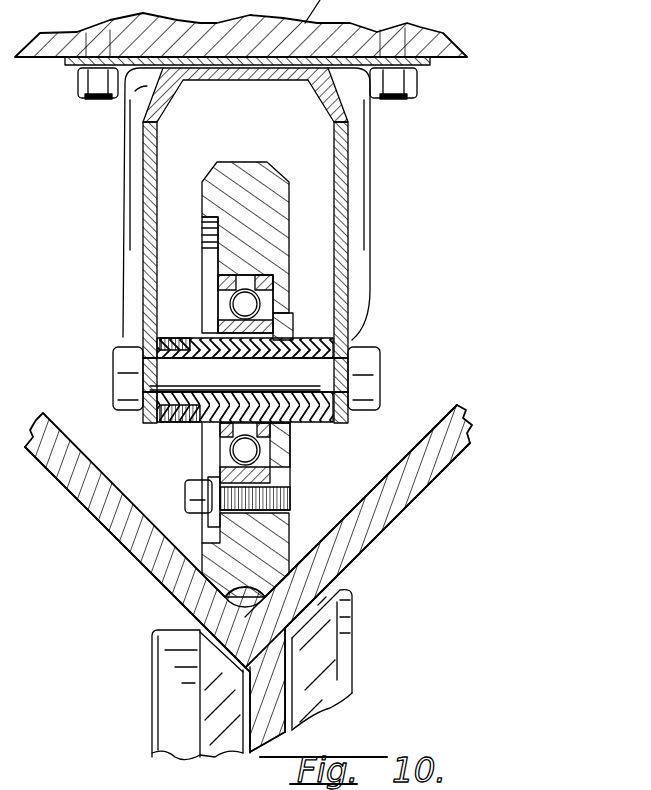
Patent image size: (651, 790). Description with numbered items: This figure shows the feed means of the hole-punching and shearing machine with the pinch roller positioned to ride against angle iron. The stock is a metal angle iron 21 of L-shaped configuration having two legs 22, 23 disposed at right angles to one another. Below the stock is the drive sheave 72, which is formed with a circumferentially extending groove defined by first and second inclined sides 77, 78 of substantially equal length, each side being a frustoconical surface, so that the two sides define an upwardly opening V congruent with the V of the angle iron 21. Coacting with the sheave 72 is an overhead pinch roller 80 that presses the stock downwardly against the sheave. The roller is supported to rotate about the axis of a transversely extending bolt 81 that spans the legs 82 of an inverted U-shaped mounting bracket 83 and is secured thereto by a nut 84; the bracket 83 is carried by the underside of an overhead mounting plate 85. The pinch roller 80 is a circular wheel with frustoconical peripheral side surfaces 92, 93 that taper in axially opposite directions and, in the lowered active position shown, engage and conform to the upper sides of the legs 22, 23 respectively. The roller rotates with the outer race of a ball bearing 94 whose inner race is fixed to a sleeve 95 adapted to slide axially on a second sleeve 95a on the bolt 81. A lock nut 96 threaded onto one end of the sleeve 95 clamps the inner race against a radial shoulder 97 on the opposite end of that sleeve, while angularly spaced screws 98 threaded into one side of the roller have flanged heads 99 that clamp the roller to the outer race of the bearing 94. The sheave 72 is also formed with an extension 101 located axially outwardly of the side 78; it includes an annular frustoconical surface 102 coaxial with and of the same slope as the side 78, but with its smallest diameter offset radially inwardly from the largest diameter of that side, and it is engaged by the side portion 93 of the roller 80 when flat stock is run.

The angle iron 21 is at (119, 550).
The leg 22 is at (93, 507).
The leg 23 is at (406, 508).
The drive sheave 72 is at (150, 657).
The first inclined side 77 is at (213, 700).
The second inclined side 78 is at (253, 713).
The pinch roller 80 is at (291, 166).
The bolt 81 is at (349, 343).
The legs 82 is at (143, 218).
The mounting bracket 83 is at (264, 90).
The nut 84 is at (381, 366).
The overhead mounting plate 85 is at (76, 789).
The frustoconical side surface 92 is at (203, 578).
The frustoconical side surface 93 is at (300, 585).
The ball bearing 94 is at (250, 276).
The sleeve 95 is at (230, 358).
The second sleeve 95a is at (300, 358).
The lock nut 96 is at (294, 321).
The radial shoulder 97 is at (215, 323).
The screws 98 is at (291, 480).
The flanged heads 99 is at (207, 474).
The extension 101 is at (349, 622).
The annular frustoconical surface 102 is at (327, 667).